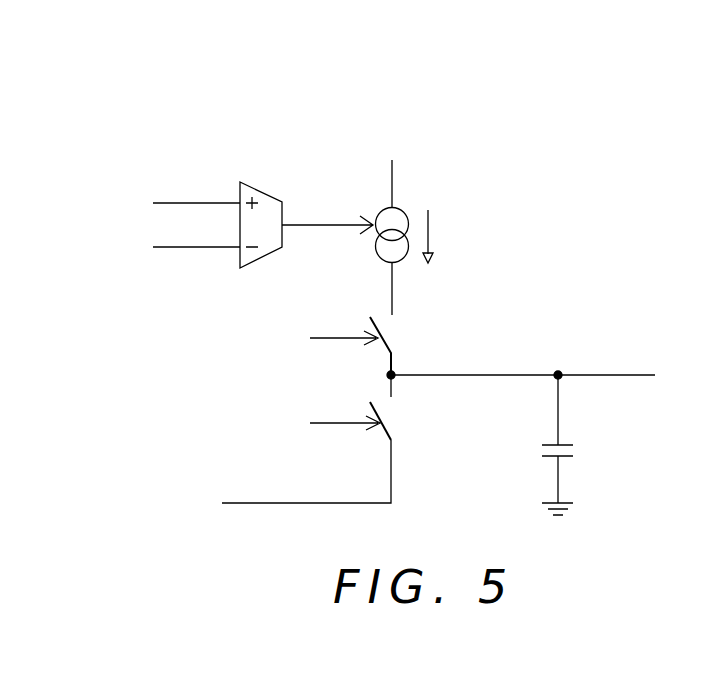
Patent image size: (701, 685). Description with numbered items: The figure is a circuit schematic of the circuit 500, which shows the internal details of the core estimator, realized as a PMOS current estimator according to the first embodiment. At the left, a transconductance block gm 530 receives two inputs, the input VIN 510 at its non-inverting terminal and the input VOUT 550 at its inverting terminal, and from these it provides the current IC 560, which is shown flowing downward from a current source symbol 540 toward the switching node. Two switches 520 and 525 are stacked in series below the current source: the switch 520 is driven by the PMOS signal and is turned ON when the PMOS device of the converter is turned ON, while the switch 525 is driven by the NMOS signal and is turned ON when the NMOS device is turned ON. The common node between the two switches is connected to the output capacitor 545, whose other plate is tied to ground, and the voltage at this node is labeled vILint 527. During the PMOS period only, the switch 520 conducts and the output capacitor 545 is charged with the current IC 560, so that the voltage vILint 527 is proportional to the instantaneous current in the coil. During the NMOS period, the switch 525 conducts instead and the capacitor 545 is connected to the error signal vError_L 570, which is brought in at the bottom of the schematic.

The circuit 500 is at (127, 118).
The input VIN 510 is at (170, 178).
The input VOUT 550 is at (163, 252).
The transconductance block gm 530 is at (268, 192).
The current source 540 is at (402, 200).
The current IC 560 is at (462, 222).
The switch 520 is at (265, 325).
The switch 525 is at (268, 417).
The error signal vError_L 570 is at (255, 477).
The voltage vILint 527 is at (640, 343).
The output capacitor 545 is at (597, 438).